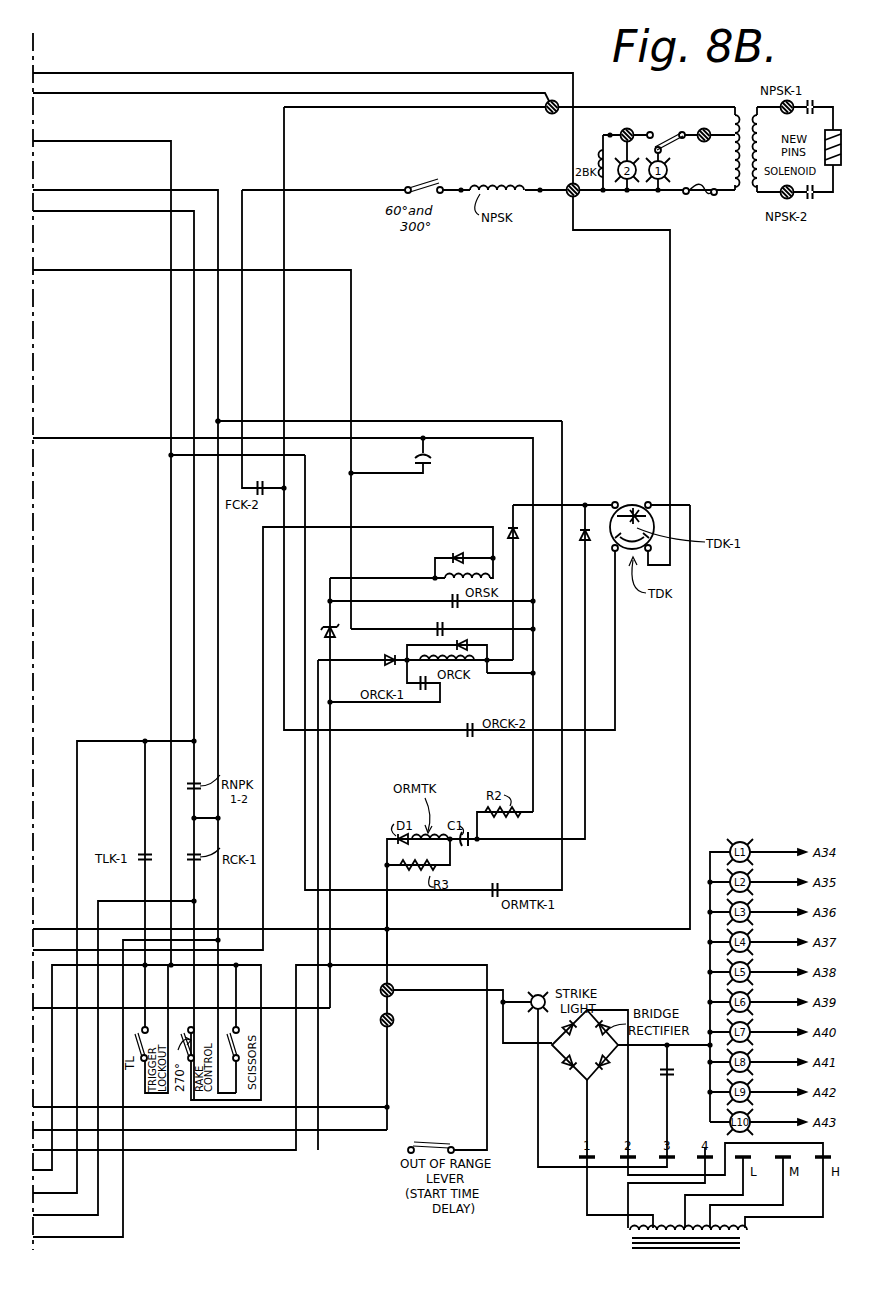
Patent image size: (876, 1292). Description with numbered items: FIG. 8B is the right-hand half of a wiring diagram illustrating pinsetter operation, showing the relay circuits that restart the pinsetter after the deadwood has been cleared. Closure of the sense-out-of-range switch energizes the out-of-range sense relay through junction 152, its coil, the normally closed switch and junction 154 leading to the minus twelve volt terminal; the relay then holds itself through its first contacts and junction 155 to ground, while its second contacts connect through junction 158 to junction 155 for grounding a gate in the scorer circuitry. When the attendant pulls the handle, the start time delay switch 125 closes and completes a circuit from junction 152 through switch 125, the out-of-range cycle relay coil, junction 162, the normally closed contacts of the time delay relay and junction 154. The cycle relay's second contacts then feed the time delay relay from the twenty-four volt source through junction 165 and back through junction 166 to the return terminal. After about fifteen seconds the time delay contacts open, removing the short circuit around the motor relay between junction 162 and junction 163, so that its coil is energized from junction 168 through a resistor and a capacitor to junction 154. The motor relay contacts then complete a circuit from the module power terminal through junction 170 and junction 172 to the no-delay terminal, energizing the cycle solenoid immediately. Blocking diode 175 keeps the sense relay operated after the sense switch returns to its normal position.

The junction 165 is at (548, 112).
The junction 166 is at (578, 195).
The junction 172 is at (219, 419).
The junction 170 is at (169, 456).
The junction 162 is at (586, 504).
The junction 155 is at (546, 599).
The junction 158 is at (546, 627).
The blocking diode 175 is at (334, 634).
The junction 168 is at (531, 675).
The junction 163 is at (388, 928).
The junction 152 is at (331, 965).
The junction 154 is at (389, 1107).
The start time delay switch 125 is at (434, 1146).